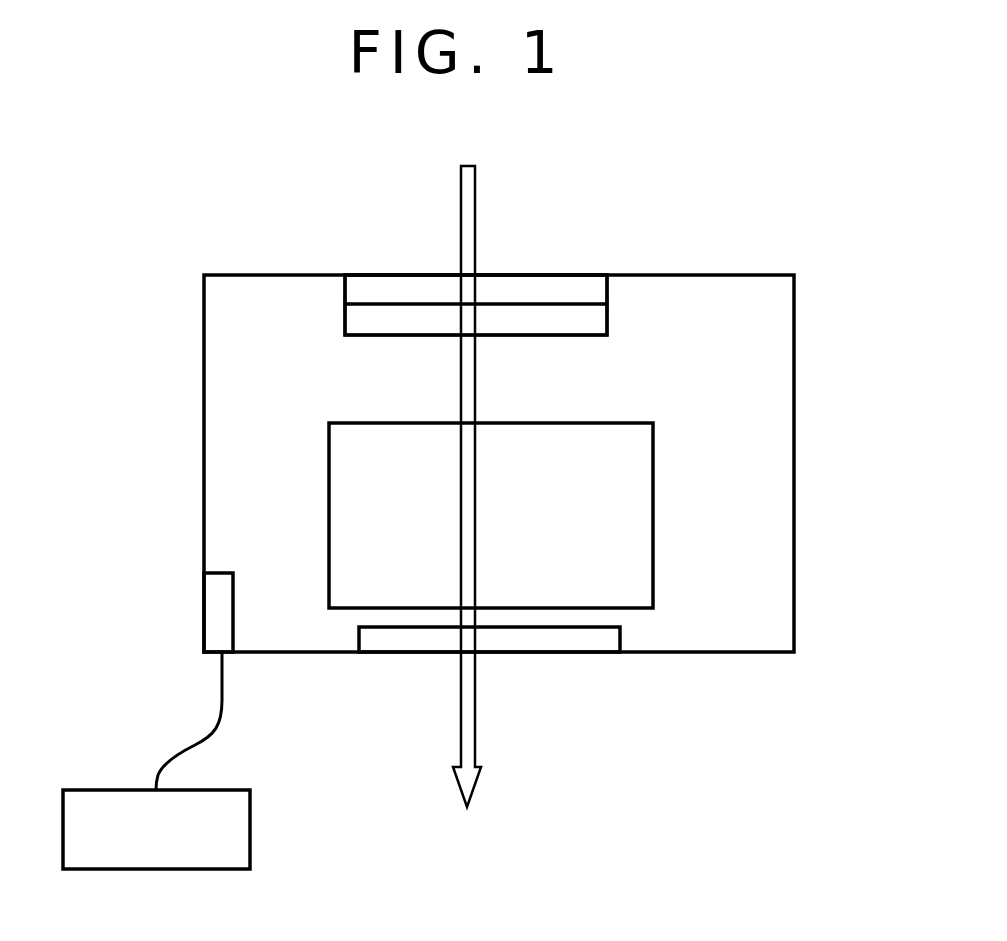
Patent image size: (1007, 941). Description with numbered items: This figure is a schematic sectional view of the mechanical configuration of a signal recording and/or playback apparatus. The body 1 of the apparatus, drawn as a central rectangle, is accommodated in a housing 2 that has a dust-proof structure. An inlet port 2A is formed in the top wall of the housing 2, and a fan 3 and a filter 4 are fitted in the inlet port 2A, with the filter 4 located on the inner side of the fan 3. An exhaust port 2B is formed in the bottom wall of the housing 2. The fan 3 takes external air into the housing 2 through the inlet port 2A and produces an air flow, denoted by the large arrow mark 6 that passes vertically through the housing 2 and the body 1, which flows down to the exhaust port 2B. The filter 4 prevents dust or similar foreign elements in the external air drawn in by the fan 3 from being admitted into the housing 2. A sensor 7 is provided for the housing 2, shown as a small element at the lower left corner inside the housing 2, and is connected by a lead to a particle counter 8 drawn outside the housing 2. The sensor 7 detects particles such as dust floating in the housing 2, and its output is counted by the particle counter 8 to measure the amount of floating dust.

The body 1 is at (625, 568).
The housing 2 is at (748, 365).
The inlet port 2A is at (347, 320).
The exhaust port 2B is at (601, 634).
The fan 3 is at (577, 291).
The filter 4 is at (592, 323).
The air flow 6 is at (489, 754).
The sensor 7 is at (233, 632).
The particle counter 8 is at (238, 835).